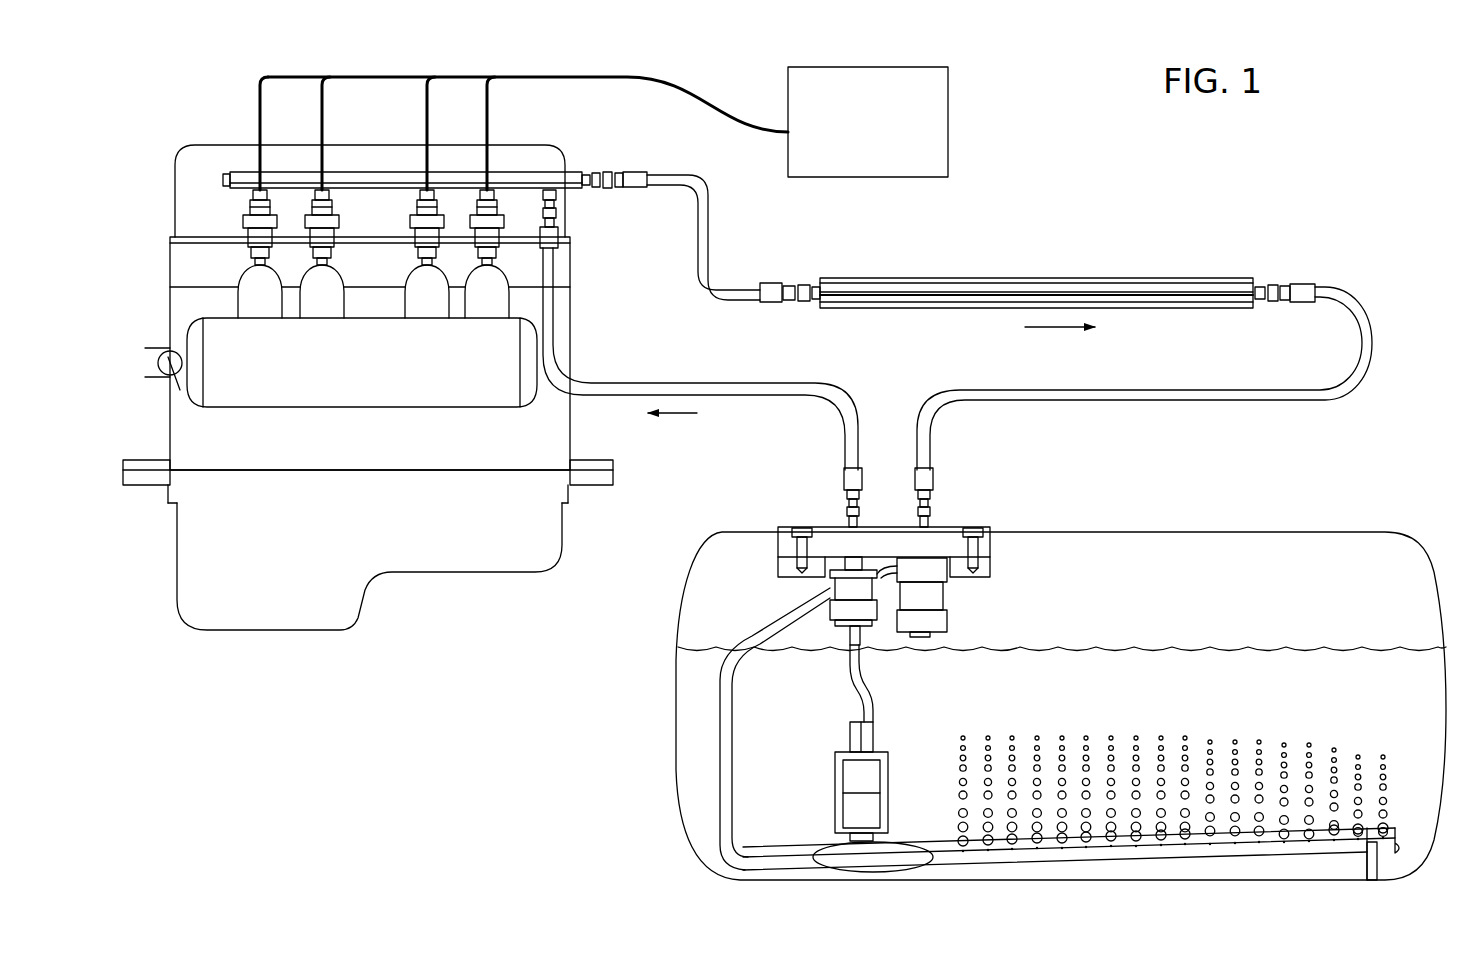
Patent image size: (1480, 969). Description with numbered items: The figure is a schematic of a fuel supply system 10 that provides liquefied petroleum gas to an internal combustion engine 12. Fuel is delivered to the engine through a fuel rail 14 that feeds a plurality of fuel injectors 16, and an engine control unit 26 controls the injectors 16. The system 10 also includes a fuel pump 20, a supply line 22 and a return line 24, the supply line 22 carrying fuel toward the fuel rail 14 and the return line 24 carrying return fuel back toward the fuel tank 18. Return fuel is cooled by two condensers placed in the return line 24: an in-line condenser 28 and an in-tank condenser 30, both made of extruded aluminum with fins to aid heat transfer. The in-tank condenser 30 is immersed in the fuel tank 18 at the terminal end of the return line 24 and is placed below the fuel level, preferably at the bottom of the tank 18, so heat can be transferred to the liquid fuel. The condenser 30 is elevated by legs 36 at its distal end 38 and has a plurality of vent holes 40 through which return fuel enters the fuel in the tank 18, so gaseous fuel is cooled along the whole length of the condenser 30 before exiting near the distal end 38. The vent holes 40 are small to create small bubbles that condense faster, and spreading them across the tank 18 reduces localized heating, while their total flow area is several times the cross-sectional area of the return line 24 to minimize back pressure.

The fuel supply system 10 is at (1043, 255).
The internal combustion engine 12 is at (178, 548).
The fuel rail 14 is at (530, 177).
The fuel injectors 16 is at (323, 237).
The fuel tank 18 is at (677, 777).
The fuel pump 20 is at (835, 788).
The supply line 22 is at (673, 383).
The return line 24 is at (1180, 397).
The engine control unit 26 is at (892, 131).
The in-line condenser 28 is at (1140, 272).
The in-tank condenser 30 is at (967, 877).
The legs 36 is at (1368, 867).
The distal end 38 is at (1397, 853).
The vent holes 40 is at (1186, 848).